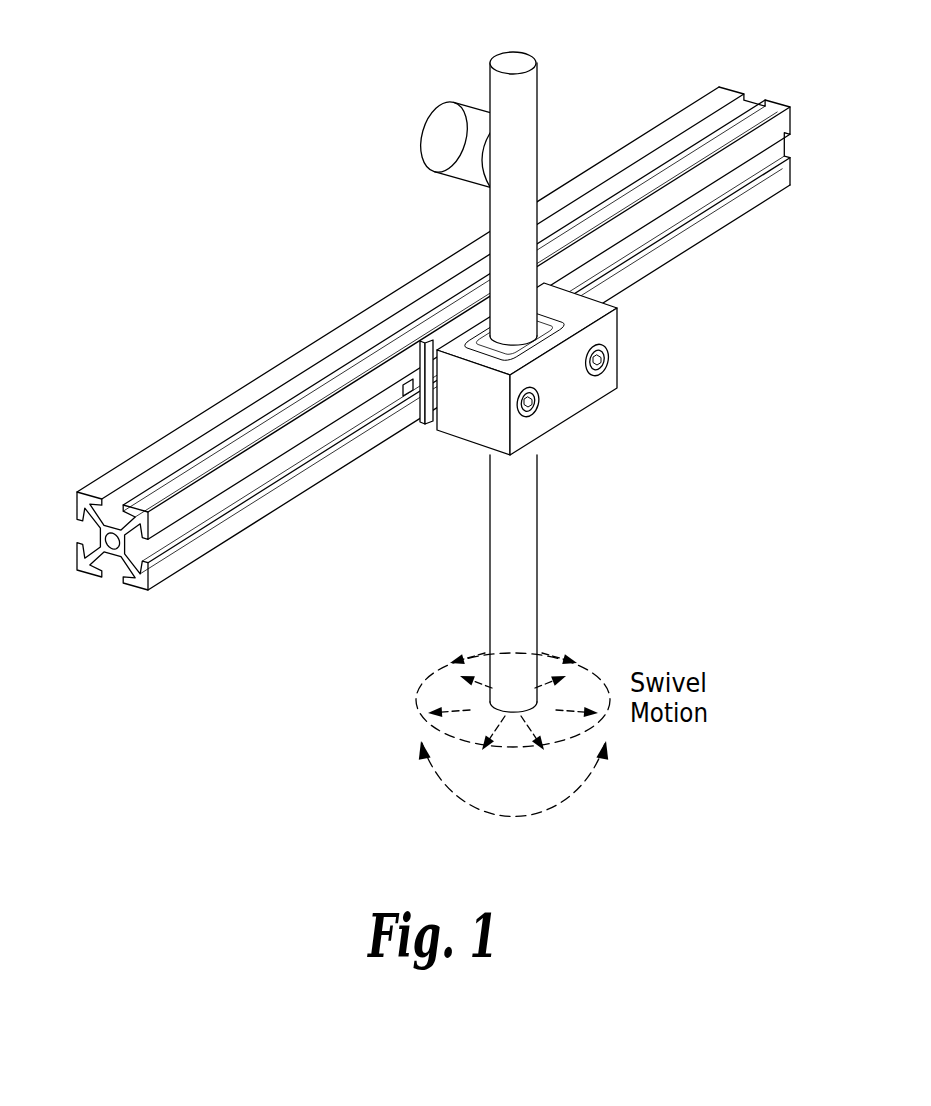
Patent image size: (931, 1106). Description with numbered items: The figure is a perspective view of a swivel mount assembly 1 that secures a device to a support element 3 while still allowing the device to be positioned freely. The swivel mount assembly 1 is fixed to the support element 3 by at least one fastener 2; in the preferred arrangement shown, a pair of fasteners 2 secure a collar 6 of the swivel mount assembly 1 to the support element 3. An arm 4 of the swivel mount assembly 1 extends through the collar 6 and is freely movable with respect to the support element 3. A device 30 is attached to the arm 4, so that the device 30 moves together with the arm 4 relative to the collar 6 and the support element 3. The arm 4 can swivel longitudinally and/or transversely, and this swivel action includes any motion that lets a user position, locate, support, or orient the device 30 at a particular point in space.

The swivel mount assembly 1 is at (515, 405).
The fastener 2 is at (607, 362).
The support element 3 is at (644, 130).
The arm 4 is at (538, 90).
The collar 6 is at (620, 330).
The device 30 is at (420, 126).